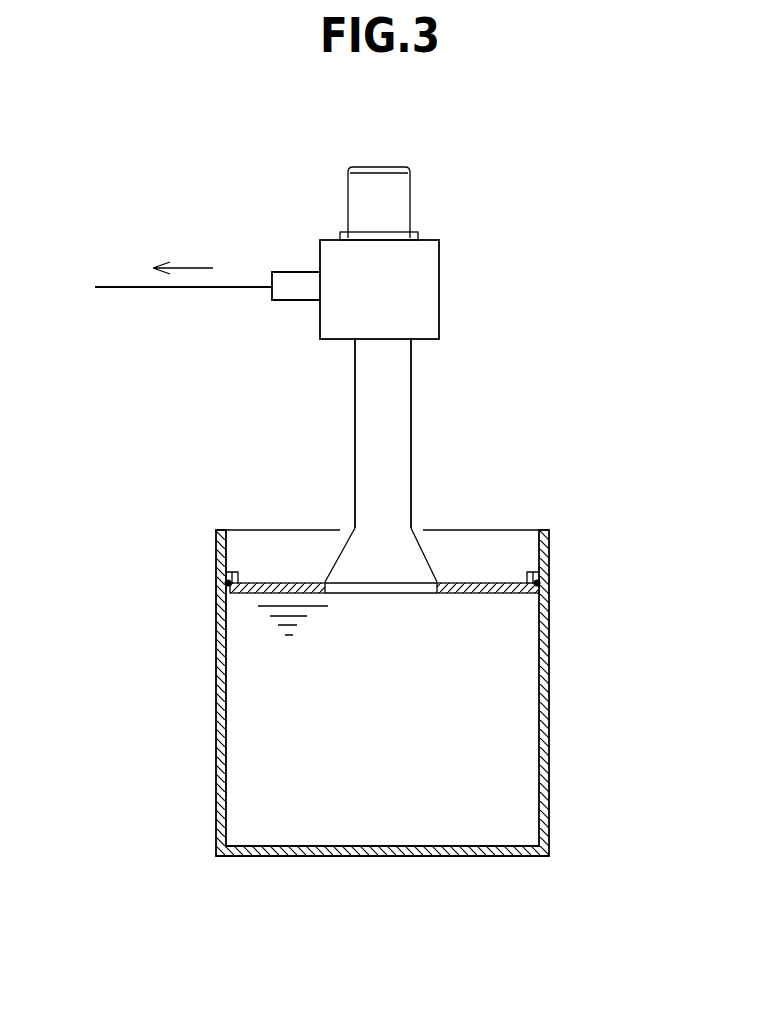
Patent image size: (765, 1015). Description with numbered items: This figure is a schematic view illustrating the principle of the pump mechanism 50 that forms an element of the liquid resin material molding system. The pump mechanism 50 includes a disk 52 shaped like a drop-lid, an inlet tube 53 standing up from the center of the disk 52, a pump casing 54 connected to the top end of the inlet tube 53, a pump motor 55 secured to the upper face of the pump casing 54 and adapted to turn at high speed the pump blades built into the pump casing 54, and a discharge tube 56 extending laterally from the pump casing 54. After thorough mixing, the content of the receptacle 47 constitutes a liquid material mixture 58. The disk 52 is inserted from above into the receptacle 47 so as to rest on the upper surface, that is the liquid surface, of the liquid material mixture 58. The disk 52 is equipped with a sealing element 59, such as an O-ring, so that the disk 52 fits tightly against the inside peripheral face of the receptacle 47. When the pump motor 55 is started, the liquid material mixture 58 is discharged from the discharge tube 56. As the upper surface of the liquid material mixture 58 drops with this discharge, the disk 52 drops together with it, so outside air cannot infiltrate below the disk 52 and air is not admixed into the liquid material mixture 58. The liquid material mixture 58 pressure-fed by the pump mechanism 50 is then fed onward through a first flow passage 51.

The receptacle 47 is at (217, 720).
The pump mechanism 50 is at (542, 208).
The first flow passage 51 is at (113, 285).
The disk 52 is at (487, 582).
The inlet tube 53 is at (353, 432).
The pump casing 54 is at (433, 302).
The pump motor 55 is at (398, 197).
The discharge tube 56 is at (292, 272).
The liquid material mixture 58 is at (472, 692).
The sealing element 59 is at (540, 583).